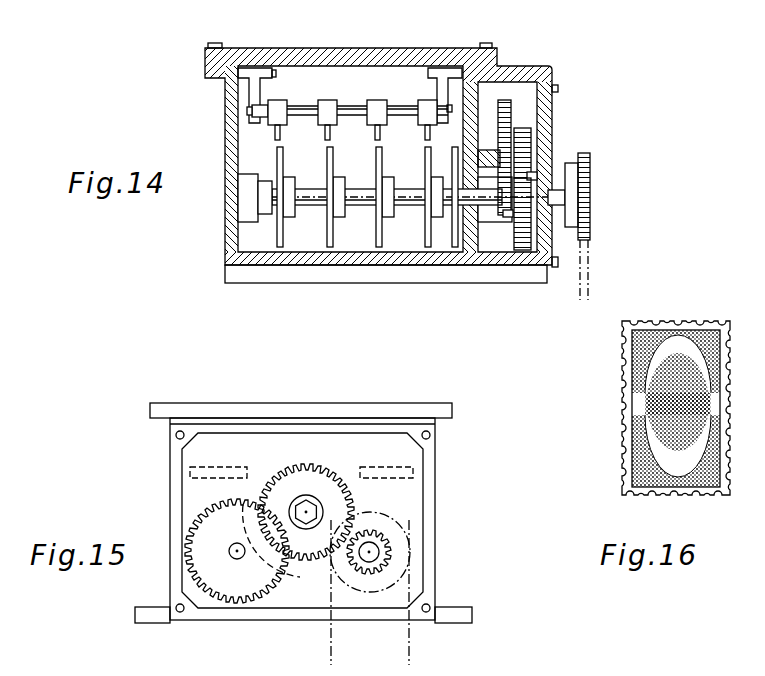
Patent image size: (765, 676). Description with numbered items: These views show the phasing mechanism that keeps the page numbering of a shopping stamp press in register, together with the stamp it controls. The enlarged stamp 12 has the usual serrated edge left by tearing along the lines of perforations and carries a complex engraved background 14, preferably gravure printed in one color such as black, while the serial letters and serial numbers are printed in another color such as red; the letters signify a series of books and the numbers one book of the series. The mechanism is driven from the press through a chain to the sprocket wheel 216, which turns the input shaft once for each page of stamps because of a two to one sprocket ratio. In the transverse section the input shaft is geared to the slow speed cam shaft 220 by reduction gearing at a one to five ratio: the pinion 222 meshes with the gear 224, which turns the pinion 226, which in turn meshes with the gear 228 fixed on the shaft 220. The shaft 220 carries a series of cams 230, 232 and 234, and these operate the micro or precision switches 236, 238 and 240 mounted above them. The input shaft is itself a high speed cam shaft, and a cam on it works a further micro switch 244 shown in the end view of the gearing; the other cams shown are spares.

In FIG. 16, the stamp 12 is at (622, 412).
In FIG. 16, the engraved background 14 is at (645, 350).
In FIG. 14, the sprocket wheel 216 is at (584, 153).
In FIG. 14, the shaft 220 is at (360, 187).
In FIG. 15, the shaft 220 is at (238, 560).
In FIG. 15, the pinion 222 is at (378, 540).
In FIG. 14, the gear 224 is at (505, 100).
In FIG. 15, the gear 224 is at (345, 469).
In FIG. 14, the pinion 226 is at (526, 128).
In FIG. 15, the pinion 226 is at (310, 485).
In FIG. 14, the gear 228 is at (521, 245).
In FIG. 15, the gear 228 is at (276, 575).
In FIG. 14, the cam 230 is at (281, 241).
In FIG. 14, the cam 232 is at (331, 241).
In FIG. 14, the cam 234 is at (380, 241).
In FIG. 14, the micro switch 236 is at (280, 100).
In FIG. 14, the micro switch 238 is at (331, 100).
In FIG. 14, the micro switch 240 is at (382, 100).
In FIG. 15, the micro switch 240 is at (218, 467).
In FIG. 15, the micro switch 244 is at (408, 465).